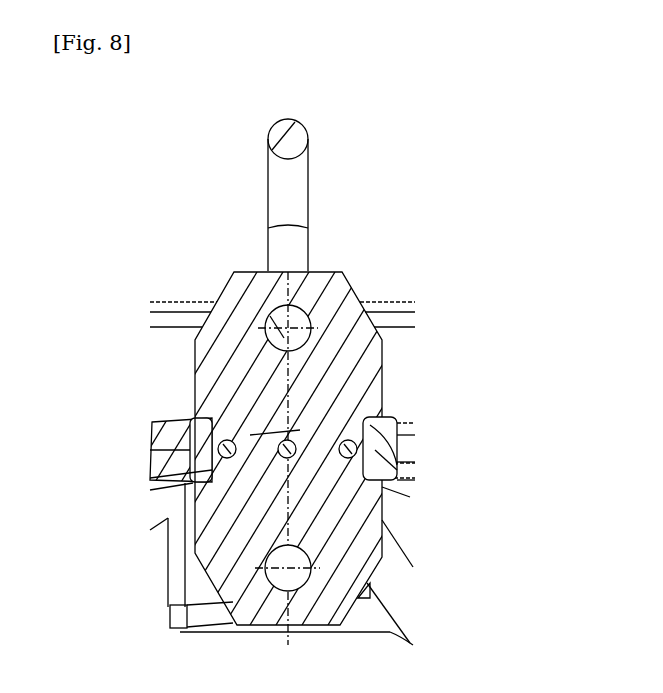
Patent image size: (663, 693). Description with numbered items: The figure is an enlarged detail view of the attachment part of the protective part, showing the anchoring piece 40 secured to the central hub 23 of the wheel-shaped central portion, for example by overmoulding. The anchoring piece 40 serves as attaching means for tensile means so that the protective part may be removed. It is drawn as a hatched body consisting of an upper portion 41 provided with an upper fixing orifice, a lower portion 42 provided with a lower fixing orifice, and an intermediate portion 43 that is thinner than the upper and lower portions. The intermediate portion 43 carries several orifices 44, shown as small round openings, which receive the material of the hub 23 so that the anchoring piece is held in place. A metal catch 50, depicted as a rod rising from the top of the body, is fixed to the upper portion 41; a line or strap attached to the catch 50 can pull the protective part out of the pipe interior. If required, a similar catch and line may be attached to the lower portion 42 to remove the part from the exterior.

The central hub 23 is at (389, 428).
The anchoring piece 40 is at (192, 261).
The upper portion 41 is at (357, 304).
The lower portion 42 is at (366, 558).
The intermediate portion 43 is at (231, 422).
The orifices 44 is at (252, 466).
The metal catch 50 is at (306, 184).